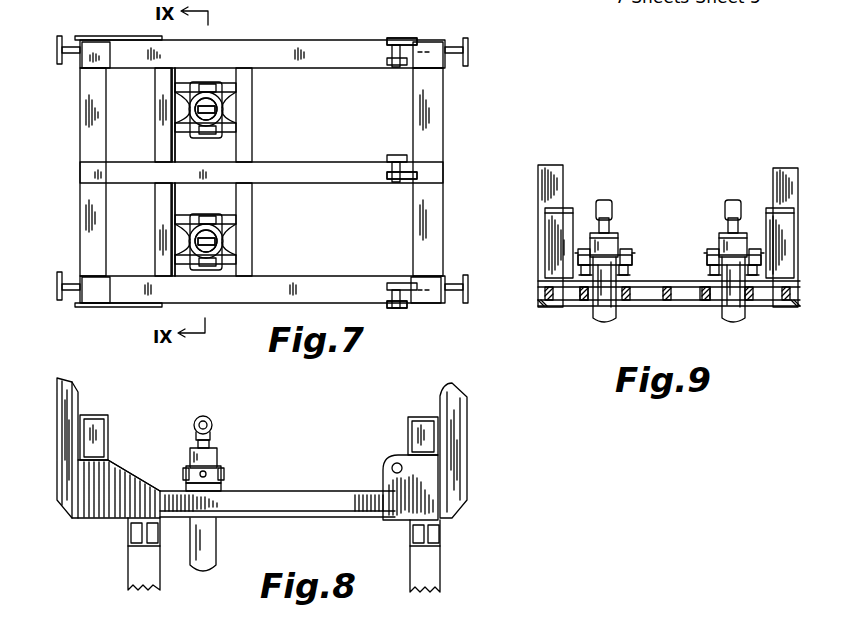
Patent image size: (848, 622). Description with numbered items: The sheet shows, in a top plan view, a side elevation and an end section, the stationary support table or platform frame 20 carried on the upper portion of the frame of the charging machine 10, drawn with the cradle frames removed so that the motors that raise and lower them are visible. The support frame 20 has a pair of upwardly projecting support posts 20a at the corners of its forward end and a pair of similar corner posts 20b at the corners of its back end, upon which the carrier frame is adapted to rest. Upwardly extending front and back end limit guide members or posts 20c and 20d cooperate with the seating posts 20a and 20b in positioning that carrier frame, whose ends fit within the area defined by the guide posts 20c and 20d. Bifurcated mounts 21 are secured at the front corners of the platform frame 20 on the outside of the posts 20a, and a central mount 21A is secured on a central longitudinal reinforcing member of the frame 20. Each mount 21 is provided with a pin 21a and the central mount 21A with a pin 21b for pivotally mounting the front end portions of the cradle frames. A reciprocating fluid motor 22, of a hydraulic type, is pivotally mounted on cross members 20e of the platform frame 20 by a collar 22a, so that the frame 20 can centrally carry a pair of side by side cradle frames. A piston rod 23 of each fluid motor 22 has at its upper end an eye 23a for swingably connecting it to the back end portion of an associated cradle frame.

In FIG. 8, the charging machine 10 is at (128, 551).
In FIG. 7, the support frame 20 is at (304, 39).
In FIG. 8, the support frame 20 is at (306, 492).
In FIG. 9, the support frame 20 is at (697, 323).
In FIG. 7, the support posts 20a is at (428, 52).
In FIG. 8, the support posts 20a is at (423, 416).
In FIG. 7, the corner posts 20b is at (90, 50).
In FIG. 8, the corner posts 20b is at (100, 415).
In FIG. 9, the corner posts 20b is at (558, 212).
In FIG. 7, the front end limit guide member 20c is at (480, 50).
In FIG. 8, the front end limit guide member 20c is at (467, 440).
In FIG. 7, the back end limit guide member 20d is at (55, 47).
In FIG. 8, the back end limit guide member 20d is at (55, 433).
In FIG. 9, the back end limit guide member 20d is at (553, 207).
In FIG. 7, the cross members 20e is at (172, 104).
In FIG. 9, the cross members 20e is at (632, 290).
In FIG. 7, the bifurcated mounts 21 is at (398, 38).
In FIG. 8, the bifurcated mounts 21 is at (402, 510).
In FIG. 7, the pin 21a is at (394, 38).
In FIG. 8, the pin 21a is at (397, 462).
In FIG. 7, the pin 21b is at (399, 155).
In FIG. 7, the central mount 21A is at (398, 185).
In FIG. 7, the reciprocating fluid motor 22 is at (222, 97).
In FIG. 8, the reciprocating fluid motor 22 is at (217, 537).
In FIG. 9, the reciprocating fluid motor 22 is at (600, 314).
In FIG. 8, the collar 22a is at (222, 471).
In FIG. 9, the collar 22a is at (620, 257).
In FIG. 8, the piston rod 23 is at (197, 442).
In FIG. 9, the piston rod 23 is at (612, 233).
In FIG. 7, the eye 23a is at (218, 114).
In FIG. 8, the eye 23a is at (214, 423).
In FIG. 9, the eye 23a is at (609, 205).